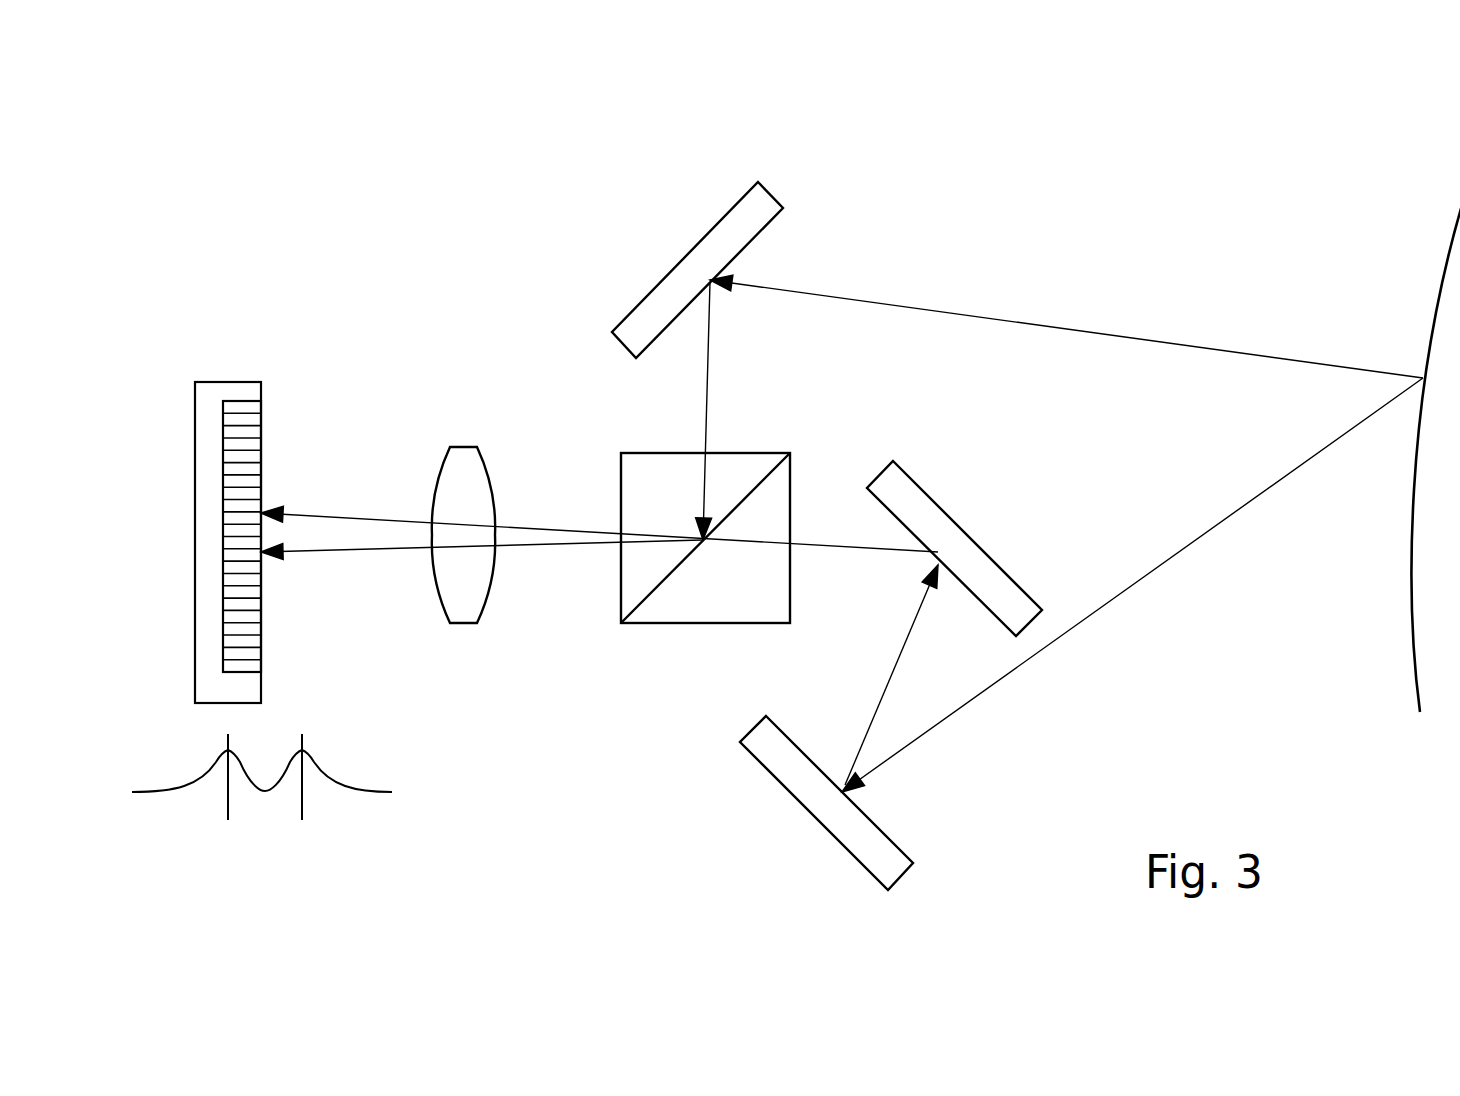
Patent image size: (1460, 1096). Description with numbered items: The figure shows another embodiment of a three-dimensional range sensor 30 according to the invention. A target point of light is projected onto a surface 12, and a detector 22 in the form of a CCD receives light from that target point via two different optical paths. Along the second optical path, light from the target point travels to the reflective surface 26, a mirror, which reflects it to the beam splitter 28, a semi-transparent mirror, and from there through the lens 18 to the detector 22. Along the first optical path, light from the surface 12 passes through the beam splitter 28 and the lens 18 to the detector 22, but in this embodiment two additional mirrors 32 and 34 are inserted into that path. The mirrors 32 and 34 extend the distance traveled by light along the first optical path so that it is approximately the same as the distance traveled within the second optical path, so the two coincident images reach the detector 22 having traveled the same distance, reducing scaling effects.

The range sensor 30 is at (368, 158).
The surface 12 is at (1440, 278).
The detector 22 is at (230, 392).
The lens 18 is at (463, 467).
The beam splitter 28 is at (710, 610).
The reflective surface 26 is at (762, 202).
The mirror 34 is at (920, 500).
The mirror 32 is at (793, 780).